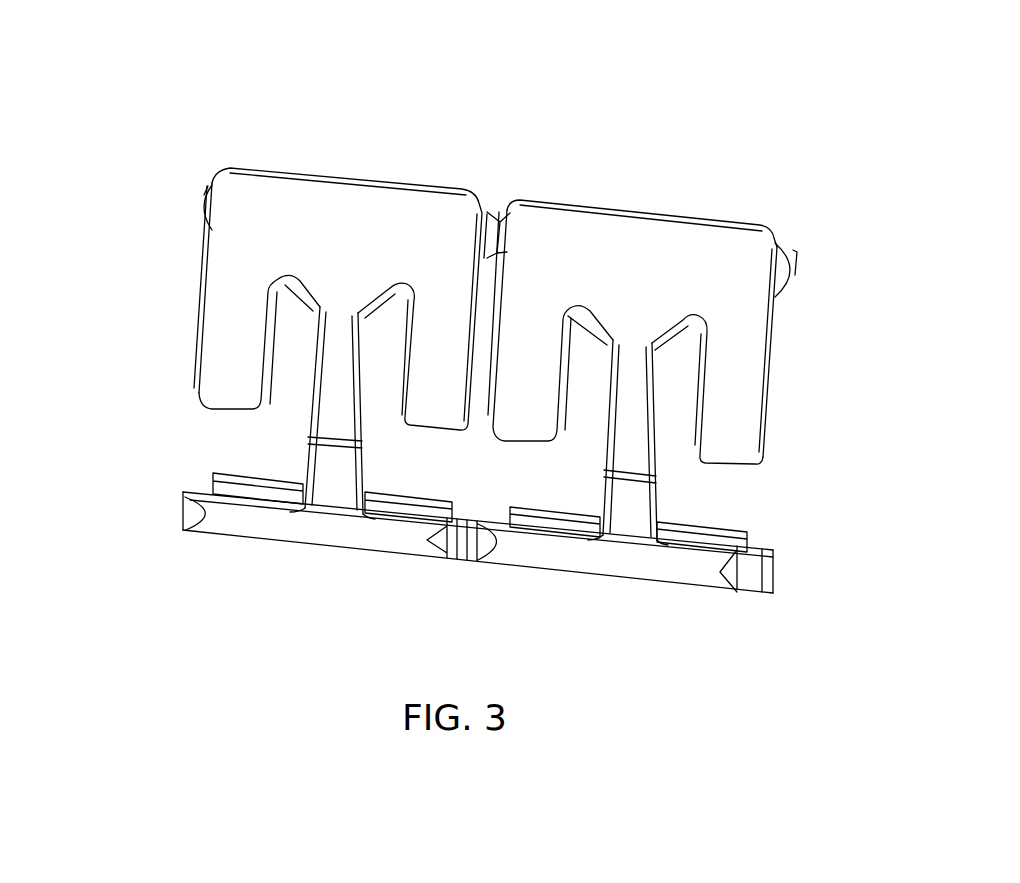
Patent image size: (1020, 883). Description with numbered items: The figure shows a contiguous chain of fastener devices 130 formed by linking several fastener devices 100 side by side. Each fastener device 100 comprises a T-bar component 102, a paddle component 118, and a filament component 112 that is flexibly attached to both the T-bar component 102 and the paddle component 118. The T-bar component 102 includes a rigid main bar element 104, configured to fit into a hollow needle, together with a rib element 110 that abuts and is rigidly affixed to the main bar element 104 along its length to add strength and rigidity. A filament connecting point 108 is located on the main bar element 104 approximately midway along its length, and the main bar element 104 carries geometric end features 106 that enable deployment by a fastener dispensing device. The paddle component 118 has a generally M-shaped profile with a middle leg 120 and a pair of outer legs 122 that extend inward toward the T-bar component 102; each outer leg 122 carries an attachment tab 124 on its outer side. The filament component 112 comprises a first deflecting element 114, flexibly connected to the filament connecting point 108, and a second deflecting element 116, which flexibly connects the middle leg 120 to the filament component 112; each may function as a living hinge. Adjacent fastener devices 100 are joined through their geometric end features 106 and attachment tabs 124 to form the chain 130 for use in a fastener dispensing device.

The contiguous chain of fastener devices 130 is at (550, 130).
The fastener device 100 is at (342, 167).
The T-bar component 102 is at (218, 542).
The main bar element 104 is at (353, 547).
The geometric end features 106 is at (773, 580).
The filament connecting point 108 is at (357, 507).
The rib element 110 is at (560, 510).
The filament component 112 is at (665, 502).
The first deflecting element 114 is at (740, 522).
The second deflecting element 116 is at (665, 477).
The paddle component 118 is at (790, 346).
The middle leg 120 is at (307, 416).
The outer legs 122 is at (200, 330).
The attachment tab 124 is at (200, 205).